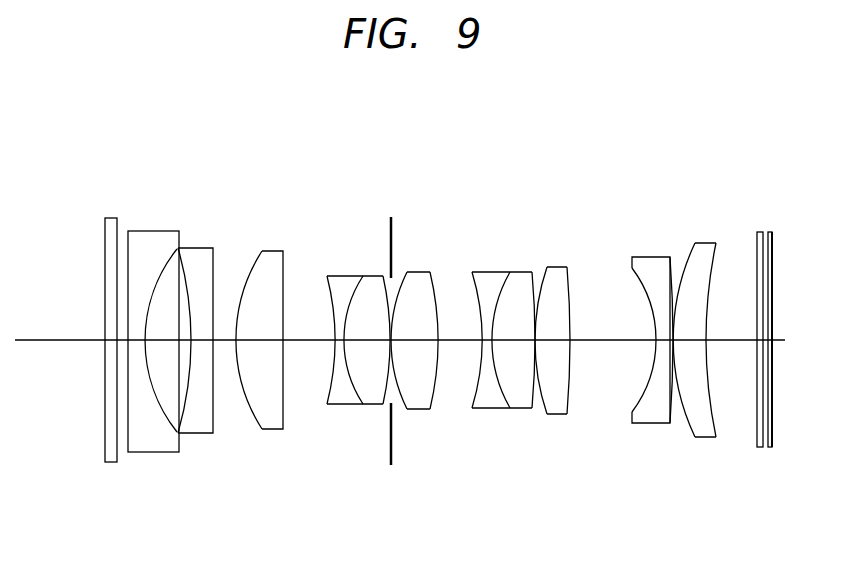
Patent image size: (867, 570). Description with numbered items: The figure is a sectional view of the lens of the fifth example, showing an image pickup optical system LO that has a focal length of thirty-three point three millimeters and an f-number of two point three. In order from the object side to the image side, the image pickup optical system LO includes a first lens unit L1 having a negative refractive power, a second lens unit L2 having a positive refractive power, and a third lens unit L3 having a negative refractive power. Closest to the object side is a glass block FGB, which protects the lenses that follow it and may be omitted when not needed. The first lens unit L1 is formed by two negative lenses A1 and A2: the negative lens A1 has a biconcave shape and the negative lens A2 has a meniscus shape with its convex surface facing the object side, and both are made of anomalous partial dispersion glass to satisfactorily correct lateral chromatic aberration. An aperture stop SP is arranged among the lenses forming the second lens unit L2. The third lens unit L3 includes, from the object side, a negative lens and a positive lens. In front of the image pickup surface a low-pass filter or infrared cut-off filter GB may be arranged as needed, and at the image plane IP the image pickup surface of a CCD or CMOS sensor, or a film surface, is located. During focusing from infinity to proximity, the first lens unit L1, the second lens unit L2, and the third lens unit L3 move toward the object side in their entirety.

The image pickup optical system LO is at (718, 125).
The first lens unit L1 is at (212, 186).
The second lens unit L2 is at (570, 186).
The third lens unit L3 is at (718, 186).
The aperture stop SP is at (388, 235).
The glass block FGB is at (103, 446).
The negative lens A1 is at (152, 453).
The negative lens A2 is at (200, 436).
The low-pass filter or infrared cut-off filter GB is at (757, 439).
The image plane IP is at (775, 252).